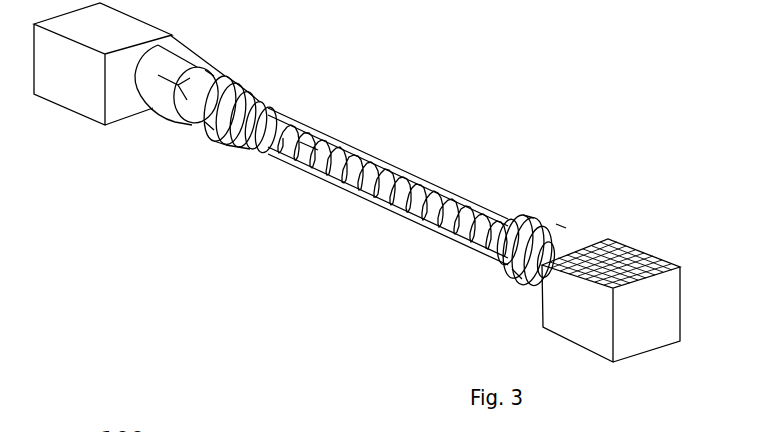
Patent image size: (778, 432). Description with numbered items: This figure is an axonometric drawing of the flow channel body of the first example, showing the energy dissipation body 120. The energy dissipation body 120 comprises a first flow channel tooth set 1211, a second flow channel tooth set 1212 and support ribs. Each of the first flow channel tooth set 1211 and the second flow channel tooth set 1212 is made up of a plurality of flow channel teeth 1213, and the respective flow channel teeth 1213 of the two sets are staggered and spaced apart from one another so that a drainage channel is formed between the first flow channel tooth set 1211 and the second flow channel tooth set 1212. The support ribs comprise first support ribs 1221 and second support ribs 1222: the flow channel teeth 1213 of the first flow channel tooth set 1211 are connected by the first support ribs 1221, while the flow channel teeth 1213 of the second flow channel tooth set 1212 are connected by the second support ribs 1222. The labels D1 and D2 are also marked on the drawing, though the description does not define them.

The energy dissipation body 120 is at (348, 185).
The first flow channel tooth set 1211 is at (338, 187).
The second flow channel tooth set 1212 is at (433, 170).
The flow channel teeth 1213 is at (275, 117).
The first support ribs 1221 is at (415, 202).
The second support ribs 1222 is at (500, 222).
The first direction D1 is at (319, 150).
The second direction D2 is at (562, 222).